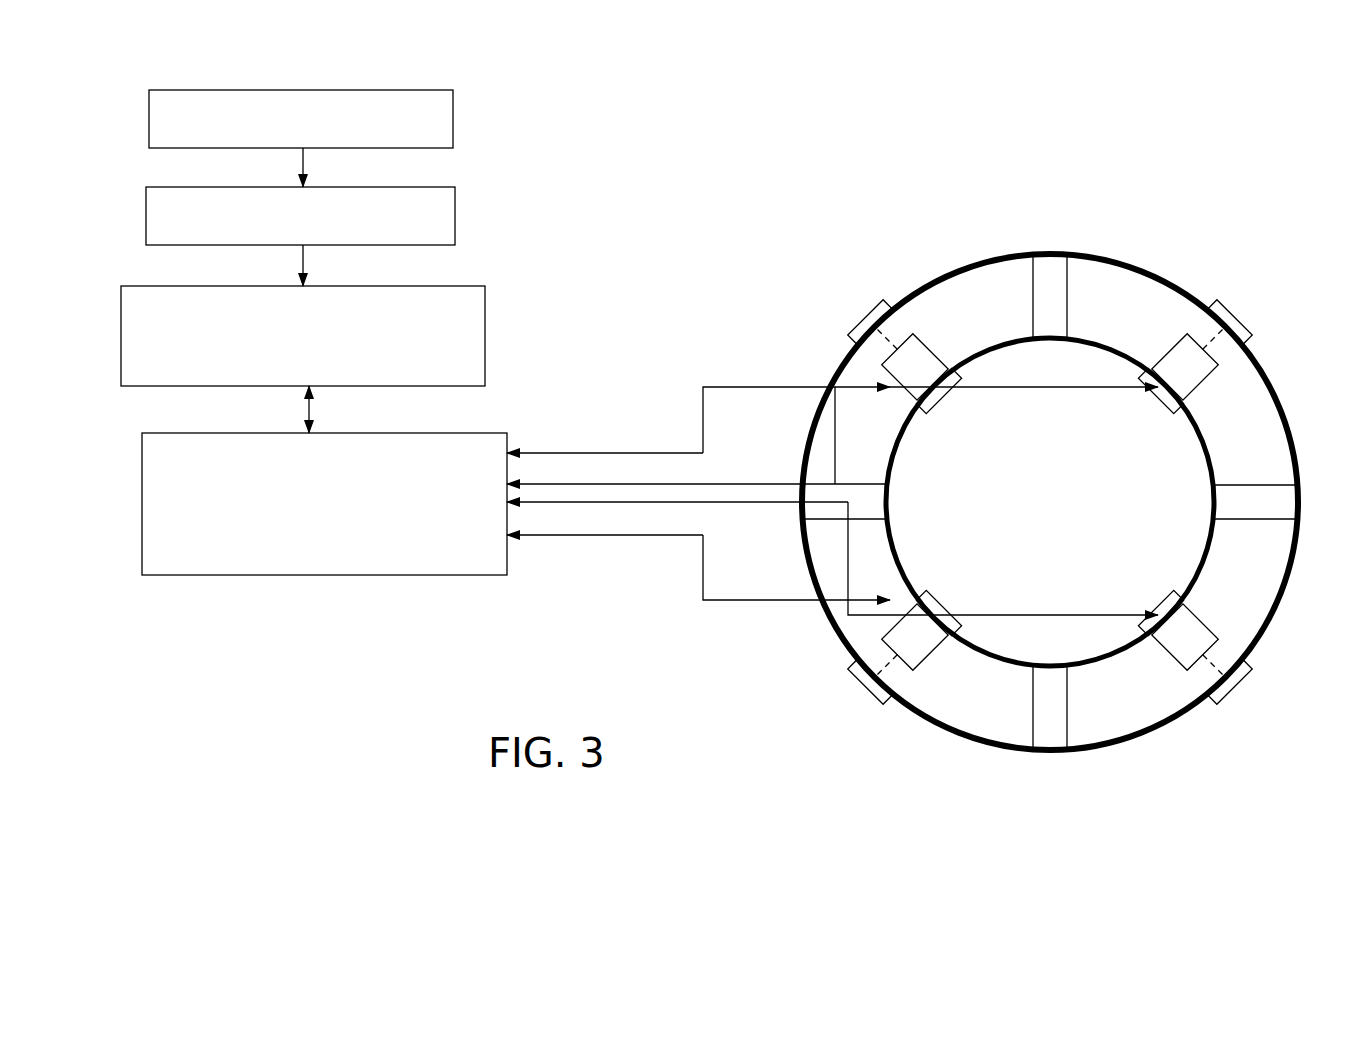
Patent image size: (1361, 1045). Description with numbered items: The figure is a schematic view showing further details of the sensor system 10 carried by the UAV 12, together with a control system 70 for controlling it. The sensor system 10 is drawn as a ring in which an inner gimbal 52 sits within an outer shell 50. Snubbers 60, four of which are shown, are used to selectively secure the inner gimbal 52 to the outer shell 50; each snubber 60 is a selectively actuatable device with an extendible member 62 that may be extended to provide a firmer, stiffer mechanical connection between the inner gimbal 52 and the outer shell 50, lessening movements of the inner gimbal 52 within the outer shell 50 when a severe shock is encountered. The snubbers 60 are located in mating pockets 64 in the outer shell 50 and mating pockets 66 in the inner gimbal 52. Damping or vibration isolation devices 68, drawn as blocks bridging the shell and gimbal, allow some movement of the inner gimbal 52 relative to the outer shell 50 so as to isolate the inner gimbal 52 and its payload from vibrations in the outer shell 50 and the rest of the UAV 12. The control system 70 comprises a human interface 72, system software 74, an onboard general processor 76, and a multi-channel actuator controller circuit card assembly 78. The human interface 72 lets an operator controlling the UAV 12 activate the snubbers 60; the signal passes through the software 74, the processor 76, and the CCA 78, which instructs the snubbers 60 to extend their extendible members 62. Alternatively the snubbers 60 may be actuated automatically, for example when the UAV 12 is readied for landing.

The actuator ring assembly 10 is at (1070, 466).
The UAV 12 is at (723, 127).
The outer shell 50 is at (1210, 452).
The inner gimbal 52 is at (1281, 397).
The snubbers 60 is at (932, 332).
The extendible members 62 is at (858, 358).
The mating pockets in the outer shell 64 is at (868, 318).
The mating pockets in the inner gimbal 66 is at (943, 400).
The damping or vibration isolation devices 68 is at (1048, 285).
The control system 70 is at (548, 260).
The human interface 72 is at (454, 119).
The system software 74 is at (456, 208).
The onboard general processor 76 is at (486, 334).
The multi-channel actuator controller circuit card assembly (CCA) 78 is at (480, 433).